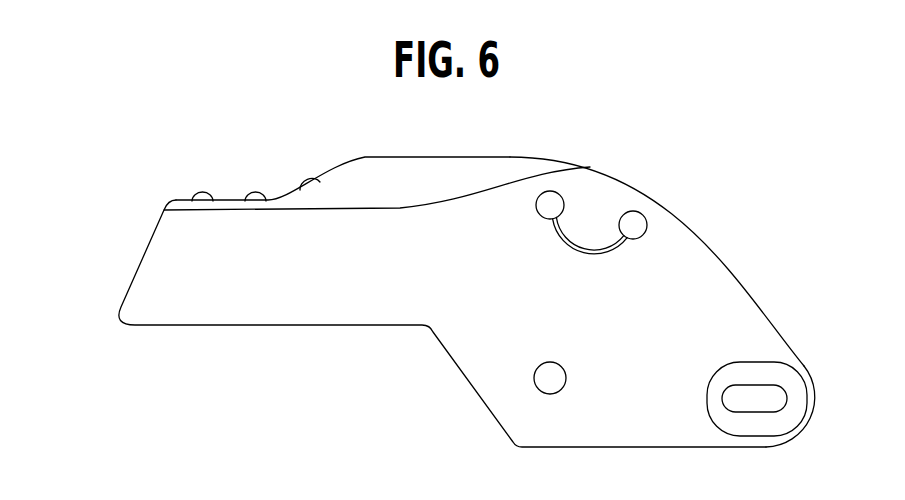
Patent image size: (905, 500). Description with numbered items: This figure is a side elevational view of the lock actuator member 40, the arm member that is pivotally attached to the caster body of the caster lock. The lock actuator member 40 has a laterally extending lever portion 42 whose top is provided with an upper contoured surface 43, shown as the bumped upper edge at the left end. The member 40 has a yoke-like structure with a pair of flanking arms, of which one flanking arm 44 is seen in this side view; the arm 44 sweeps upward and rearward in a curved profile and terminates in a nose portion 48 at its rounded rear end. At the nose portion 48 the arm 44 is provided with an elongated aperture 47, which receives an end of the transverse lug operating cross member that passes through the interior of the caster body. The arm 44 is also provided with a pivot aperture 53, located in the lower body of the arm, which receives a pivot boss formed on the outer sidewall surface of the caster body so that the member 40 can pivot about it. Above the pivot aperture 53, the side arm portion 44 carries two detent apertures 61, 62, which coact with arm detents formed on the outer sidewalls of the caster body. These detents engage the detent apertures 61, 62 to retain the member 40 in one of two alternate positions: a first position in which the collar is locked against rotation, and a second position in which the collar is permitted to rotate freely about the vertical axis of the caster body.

The lock actuator member 40 is at (128, 253).
The lever portion 42 is at (228, 295).
The upper contoured surface 43 is at (230, 198).
The flanking arm 44 is at (692, 283).
The elongated aperture 47 is at (757, 397).
The nose portion 48 is at (805, 427).
The pivot aperture 53 is at (543, 380).
The detent aperture 61 is at (558, 195).
The detent aperture 62 is at (640, 215).